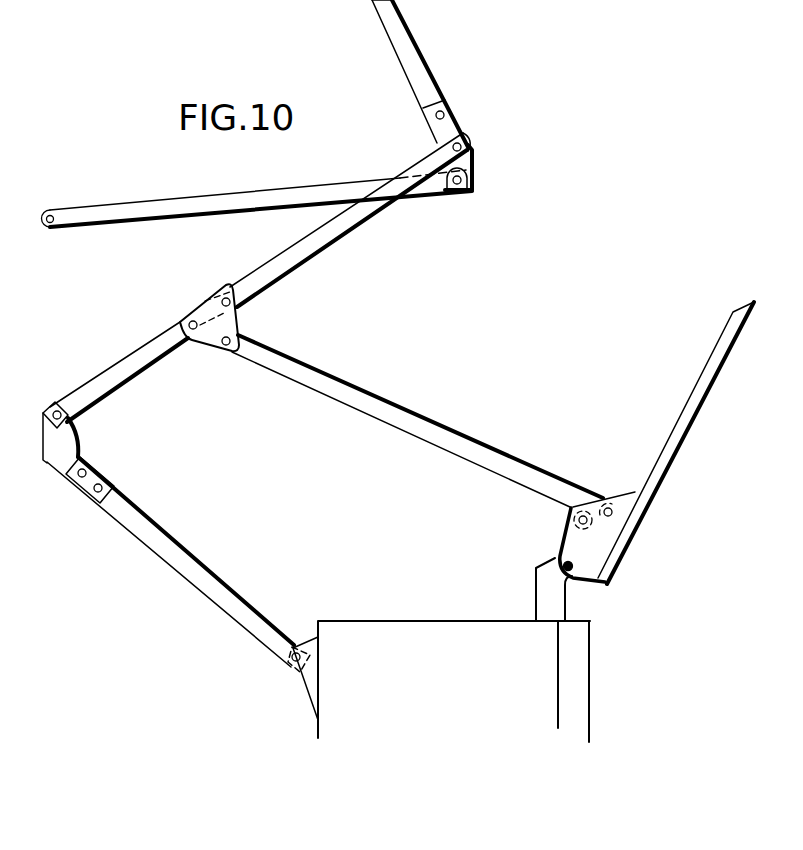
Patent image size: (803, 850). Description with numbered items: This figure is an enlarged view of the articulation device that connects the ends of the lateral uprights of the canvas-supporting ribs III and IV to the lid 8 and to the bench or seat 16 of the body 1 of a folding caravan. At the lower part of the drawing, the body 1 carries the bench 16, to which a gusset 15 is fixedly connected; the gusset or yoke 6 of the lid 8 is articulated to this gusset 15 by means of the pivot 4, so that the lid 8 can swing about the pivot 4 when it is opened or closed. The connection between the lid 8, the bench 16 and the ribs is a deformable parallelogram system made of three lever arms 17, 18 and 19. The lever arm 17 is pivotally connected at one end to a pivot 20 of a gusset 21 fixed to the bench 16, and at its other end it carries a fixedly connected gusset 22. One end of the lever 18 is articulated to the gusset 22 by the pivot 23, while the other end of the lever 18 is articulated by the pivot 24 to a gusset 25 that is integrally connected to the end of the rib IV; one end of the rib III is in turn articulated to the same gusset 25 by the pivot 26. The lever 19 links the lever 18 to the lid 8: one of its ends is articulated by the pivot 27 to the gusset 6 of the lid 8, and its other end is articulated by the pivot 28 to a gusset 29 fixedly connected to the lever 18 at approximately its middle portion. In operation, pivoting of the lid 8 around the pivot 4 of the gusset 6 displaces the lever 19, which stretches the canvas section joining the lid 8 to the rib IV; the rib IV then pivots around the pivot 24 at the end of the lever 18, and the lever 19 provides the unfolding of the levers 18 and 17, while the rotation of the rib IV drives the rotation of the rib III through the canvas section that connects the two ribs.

The body 1 is at (578, 695).
The pivot 4 is at (575, 567).
The gusset 6 is at (573, 538).
The lid 8 is at (688, 408).
The gusset 15 is at (540, 587).
The bench 16 is at (390, 633).
The lever arm 17 is at (197, 563).
The lever 18 is at (142, 355).
The lever 19 is at (449, 428).
The pivot 20 is at (297, 650).
The gusset 21 is at (310, 688).
The gusset 22 is at (63, 458).
The pivot 23 is at (62, 403).
The pivot 24 is at (472, 147).
The gusset 25 is at (466, 162).
The pivot 26 is at (455, 190).
The pivot 27 is at (617, 510).
The pivot 28 is at (222, 332).
The gusset 29 is at (200, 307).
The rib III is at (57, 224).
The rib IV is at (398, 53).